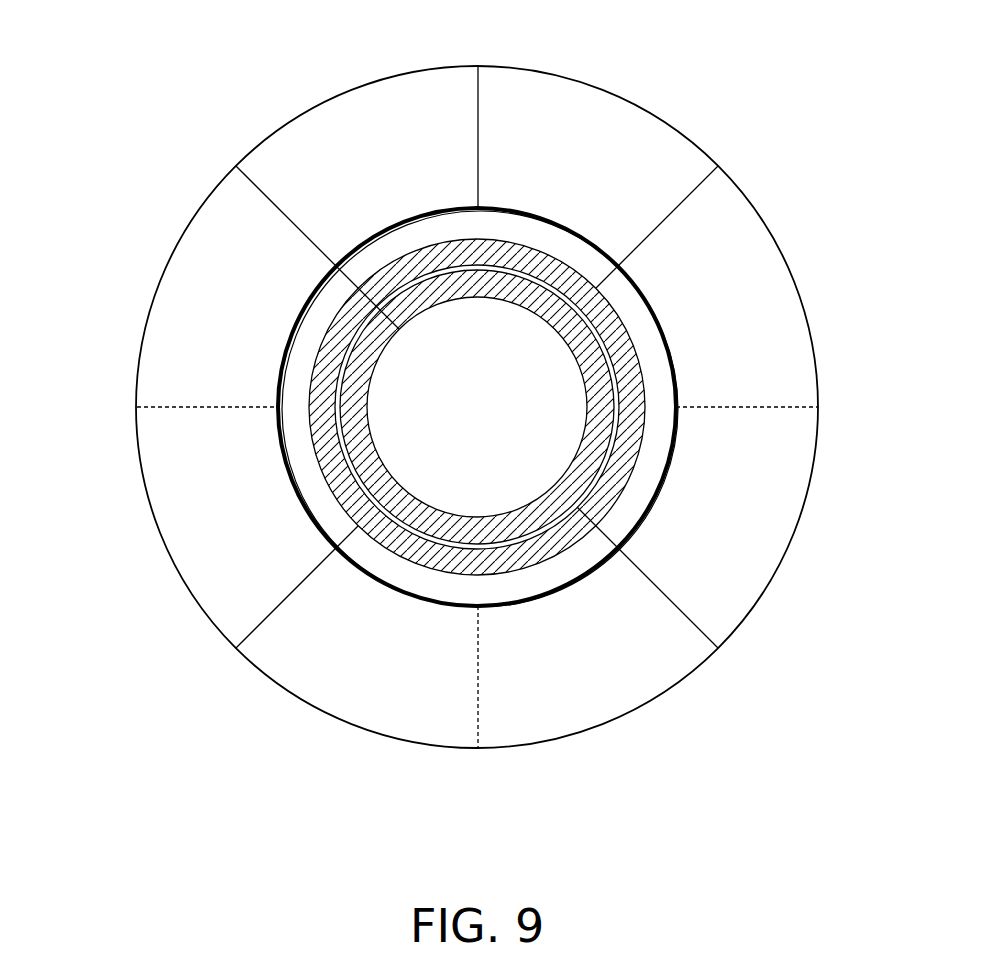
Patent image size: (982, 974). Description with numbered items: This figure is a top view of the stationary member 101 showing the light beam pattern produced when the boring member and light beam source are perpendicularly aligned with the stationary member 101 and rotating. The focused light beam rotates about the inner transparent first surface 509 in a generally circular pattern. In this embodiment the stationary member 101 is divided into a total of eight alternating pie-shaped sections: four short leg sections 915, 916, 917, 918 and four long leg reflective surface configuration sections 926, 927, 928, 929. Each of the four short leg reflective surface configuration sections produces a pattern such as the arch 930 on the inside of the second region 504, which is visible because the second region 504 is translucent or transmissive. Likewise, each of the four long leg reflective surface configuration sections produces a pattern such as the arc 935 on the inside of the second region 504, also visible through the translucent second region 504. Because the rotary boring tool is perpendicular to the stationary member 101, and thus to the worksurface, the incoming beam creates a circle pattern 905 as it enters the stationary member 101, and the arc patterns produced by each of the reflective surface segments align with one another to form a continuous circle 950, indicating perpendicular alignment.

The stationary member 101 is at (774, 182).
The arch 930 is at (360, 234).
The continuous circle 950 is at (278, 437).
The arc 935 is at (313, 290).
The circle pattern 905 is at (418, 271).
The inner transparent first surface 509 is at (602, 447).
The short leg section 916 is at (415, 116).
The long leg reflective surface configuration section 928 is at (600, 128).
The short leg section 917 is at (746, 316).
The long leg reflective surface configuration section 929 is at (743, 533).
The short leg section 918 is at (572, 665).
The long leg reflective surface configuration section 926 is at (321, 667).
The short leg section 915 is at (196, 514).
The long leg reflective surface configuration section 927 is at (184, 365).
The second region 504 is at (334, 512).